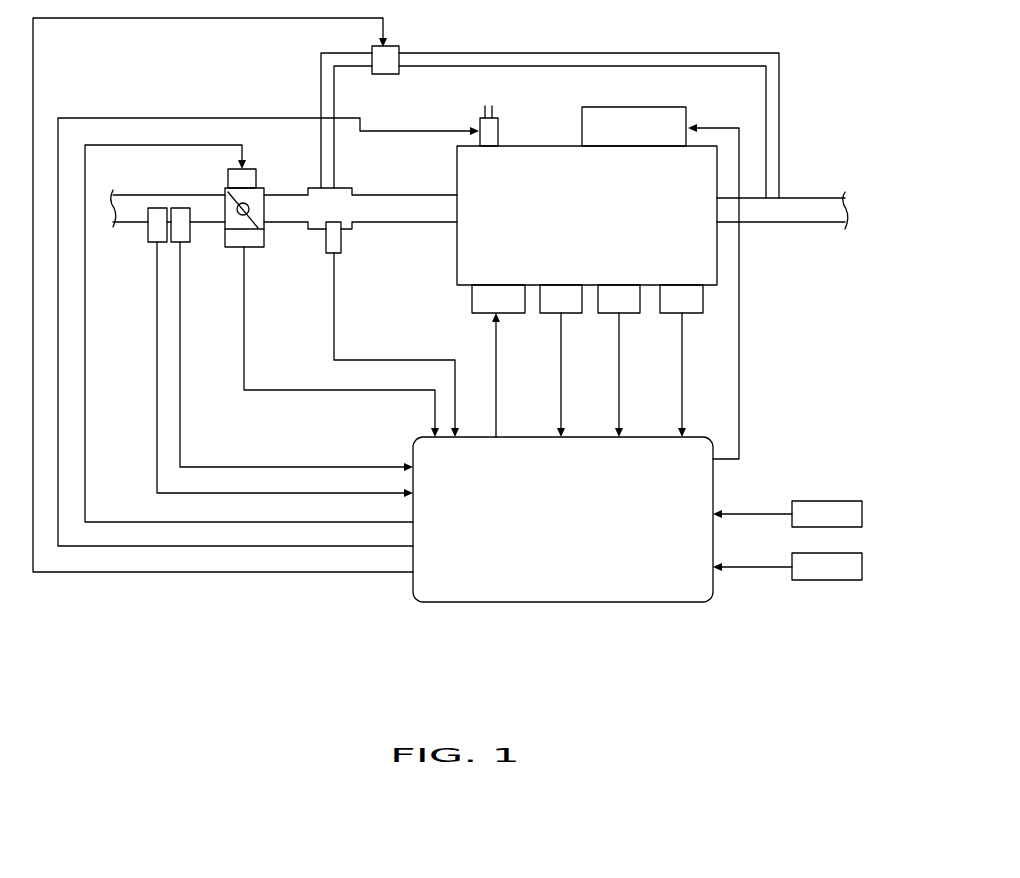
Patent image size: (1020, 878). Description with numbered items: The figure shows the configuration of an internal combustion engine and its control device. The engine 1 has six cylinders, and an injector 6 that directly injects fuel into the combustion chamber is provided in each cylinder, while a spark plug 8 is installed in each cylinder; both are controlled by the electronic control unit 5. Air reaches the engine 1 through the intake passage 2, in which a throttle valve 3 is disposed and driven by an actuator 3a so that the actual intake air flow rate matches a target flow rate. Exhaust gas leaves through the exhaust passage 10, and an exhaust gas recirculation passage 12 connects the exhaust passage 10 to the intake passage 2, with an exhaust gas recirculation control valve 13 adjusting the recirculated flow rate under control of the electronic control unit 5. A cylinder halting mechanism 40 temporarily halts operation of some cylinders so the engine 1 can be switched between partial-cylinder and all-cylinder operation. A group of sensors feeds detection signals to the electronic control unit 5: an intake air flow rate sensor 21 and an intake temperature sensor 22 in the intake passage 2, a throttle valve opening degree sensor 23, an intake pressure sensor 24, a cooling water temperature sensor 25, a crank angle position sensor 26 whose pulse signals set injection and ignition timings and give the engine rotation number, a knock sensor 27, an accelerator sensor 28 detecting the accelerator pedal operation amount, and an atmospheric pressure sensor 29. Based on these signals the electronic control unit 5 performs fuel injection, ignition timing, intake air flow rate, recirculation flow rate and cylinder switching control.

The internal combustion engine 1 is at (457, 166).
The intake passage 2 is at (397, 222).
The throttle valve 3 is at (223, 193).
The actuator 3a is at (258, 183).
The electronic control unit 5 is at (716, 477).
The injector 6 is at (499, 128).
The spark plug 8 is at (512, 316).
The exhaust passage 10 is at (817, 196).
The exhaust gas recirculation passage 12 is at (510, 52).
The exhaust gas recirculation control valve 13 is at (400, 46).
The intake air flow rate sensor 21 is at (152, 245).
The intake temperature sensor 22 is at (182, 245).
The throttle valve opening degree sensor 23 is at (250, 248).
The intake pressure sensor 24 is at (337, 255).
The cooling water temperature sensor 25 is at (576, 316).
The crank angle position sensor 26 is at (632, 316).
The knock sensor 27 is at (694, 316).
The accelerator sensor 28 is at (835, 500).
The atmospheric pressure sensor 29 is at (835, 553).
The cylinder halting mechanism 40 is at (640, 104).